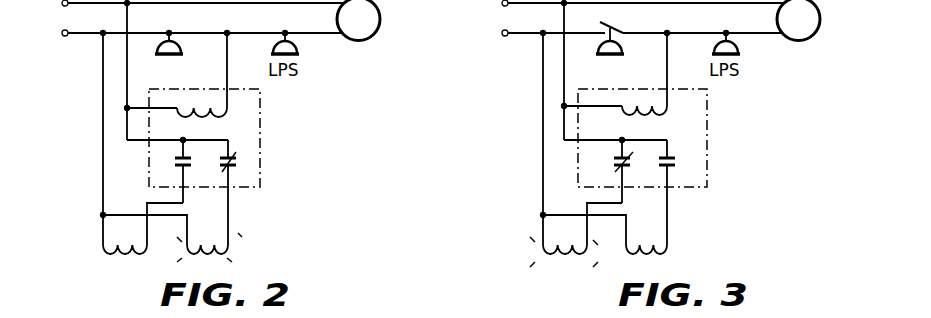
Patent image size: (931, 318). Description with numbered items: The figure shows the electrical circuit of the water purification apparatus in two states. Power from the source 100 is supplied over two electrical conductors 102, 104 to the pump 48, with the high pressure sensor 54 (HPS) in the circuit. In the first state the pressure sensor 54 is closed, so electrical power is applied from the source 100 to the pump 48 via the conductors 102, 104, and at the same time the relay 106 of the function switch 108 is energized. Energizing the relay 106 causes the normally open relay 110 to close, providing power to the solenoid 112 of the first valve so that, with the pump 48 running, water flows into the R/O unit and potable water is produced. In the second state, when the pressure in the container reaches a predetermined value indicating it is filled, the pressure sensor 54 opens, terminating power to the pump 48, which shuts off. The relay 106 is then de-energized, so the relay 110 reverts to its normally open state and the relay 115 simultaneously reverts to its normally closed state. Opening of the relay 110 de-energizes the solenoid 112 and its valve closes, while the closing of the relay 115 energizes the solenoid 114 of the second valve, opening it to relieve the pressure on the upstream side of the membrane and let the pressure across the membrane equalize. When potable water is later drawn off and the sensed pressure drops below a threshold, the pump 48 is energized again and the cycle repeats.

In FIG. 2, the source 100 is at (65, 37).
In FIG. 3, the source 100 is at (503, 37).
In FIG. 2, the electrical conductor 104 is at (227, 5).
In FIG. 3, the electrical conductor 104 is at (667, 5).
In FIG. 2, the electrical conductor 102 is at (266, 38).
In FIG. 3, the electrical conductor 102 is at (671, 37).
In FIG. 2, the pressure sensor 54 is at (183, 45).
In FIG. 3, the pressure sensor 54 is at (624, 45).
In FIG. 2, the pump 48 is at (388, 17).
In FIG. 3, the pump 48 is at (823, 24).
In FIG. 2, the relay 106 is at (230, 113).
In FIG. 3, the relay 106 is at (668, 113).
In FIG. 2, the function switch 108 is at (260, 148).
In FIG. 3, the function switch 108 is at (712, 136).
In FIG. 2, the normally open relay 110 is at (240, 170).
In FIG. 3, the normally open relay 110 is at (680, 172).
In FIG. 2, the relay 115 is at (175, 162).
In FIG. 3, the relay 115 is at (616, 163).
In FIG. 2, the solenoid 114 is at (103, 250).
In FIG. 3, the solenoid 114 is at (541, 247).
In FIG. 2, the solenoid 112 is at (230, 252).
In FIG. 3, the solenoid 112 is at (690, 236).